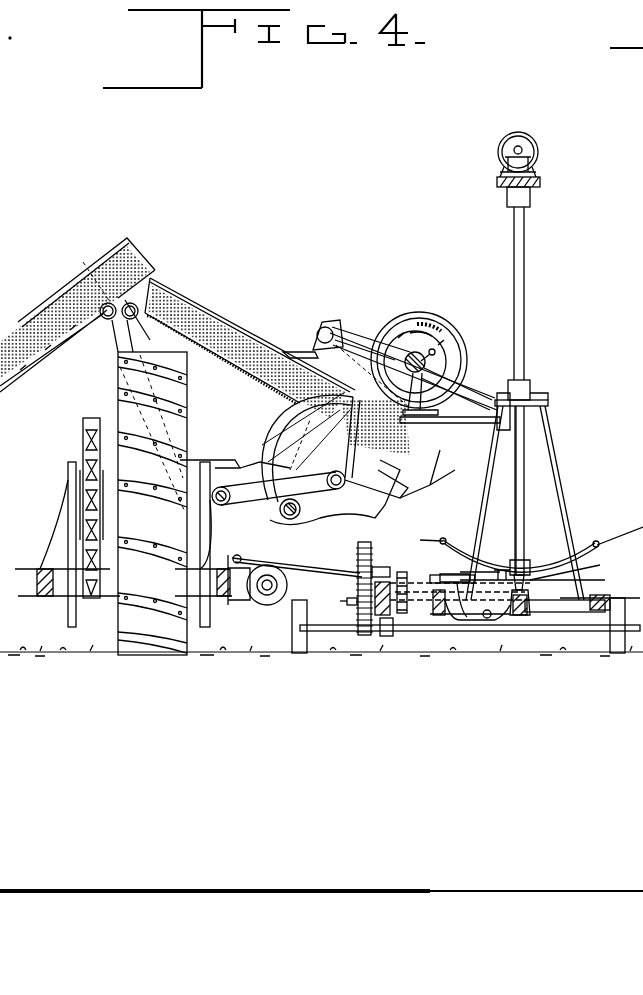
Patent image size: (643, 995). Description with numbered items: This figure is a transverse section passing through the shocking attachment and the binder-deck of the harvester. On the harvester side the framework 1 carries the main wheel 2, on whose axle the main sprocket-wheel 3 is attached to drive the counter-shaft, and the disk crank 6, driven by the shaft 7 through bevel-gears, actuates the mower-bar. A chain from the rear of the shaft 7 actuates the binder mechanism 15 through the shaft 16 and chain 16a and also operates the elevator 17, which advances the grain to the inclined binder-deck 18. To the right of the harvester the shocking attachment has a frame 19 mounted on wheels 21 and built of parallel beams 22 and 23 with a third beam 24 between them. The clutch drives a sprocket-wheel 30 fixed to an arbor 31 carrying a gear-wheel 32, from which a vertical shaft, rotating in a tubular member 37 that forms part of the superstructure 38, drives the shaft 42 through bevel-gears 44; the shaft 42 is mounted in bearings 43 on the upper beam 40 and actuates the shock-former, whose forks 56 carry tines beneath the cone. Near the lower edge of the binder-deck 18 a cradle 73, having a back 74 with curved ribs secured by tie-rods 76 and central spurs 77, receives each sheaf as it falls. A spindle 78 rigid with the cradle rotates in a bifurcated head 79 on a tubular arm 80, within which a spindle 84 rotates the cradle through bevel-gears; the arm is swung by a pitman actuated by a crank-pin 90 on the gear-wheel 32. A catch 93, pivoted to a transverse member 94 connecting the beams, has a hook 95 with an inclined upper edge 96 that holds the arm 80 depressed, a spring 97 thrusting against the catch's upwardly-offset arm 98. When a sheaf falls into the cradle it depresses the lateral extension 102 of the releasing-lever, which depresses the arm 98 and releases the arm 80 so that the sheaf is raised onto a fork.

The framework 1 is at (30, 543).
The main wheel 2 is at (176, 393).
The main sprocket-wheel 3 is at (84, 437).
The disk crank 6 is at (268, 566).
The shaft 7 is at (262, 592).
The binder mechanism 15 is at (350, 328).
The shaft 16 is at (295, 514).
The chain 16a is at (418, 316).
The elevator 17 is at (45, 362).
The binder-deck 18 is at (208, 322).
The frame 19 is at (590, 592).
The wheels 21 is at (300, 640).
The beam 22 is at (370, 626).
The beam 23 is at (590, 640).
The third beam 24 is at (440, 632).
The sprocket-wheel 30 is at (390, 625).
The arbor 31 is at (356, 600).
The gear-wheel 32 is at (364, 548).
The tubular member 37 is at (524, 318).
The superstructure 38 is at (552, 410).
The upper beam 40 is at (540, 186).
The shaft 42 is at (527, 147).
The bearings 43 is at (500, 165).
The bevel-gears 44 is at (517, 134).
The forks 56 is at (642, 281).
The cradle 73 is at (565, 552).
The back 74 is at (530, 570).
The tie-rods 76 is at (445, 556).
The spurs 77 is at (512, 548).
The spindle 78 is at (540, 580).
The bifurcated head 79 is at (522, 640).
The tubular arm 80 is at (530, 645).
The spindle 84 is at (512, 640).
The crank-pin 90 is at (345, 625).
The catch 93 is at (470, 635).
The transverse member 94 is at (562, 640).
The hook 95 is at (536, 596).
The inclined upper edge 96 is at (532, 586).
The spring 97 is at (413, 640).
The upwardly-offset arm 98 is at (452, 565).
The lateral extension 102 is at (500, 565).